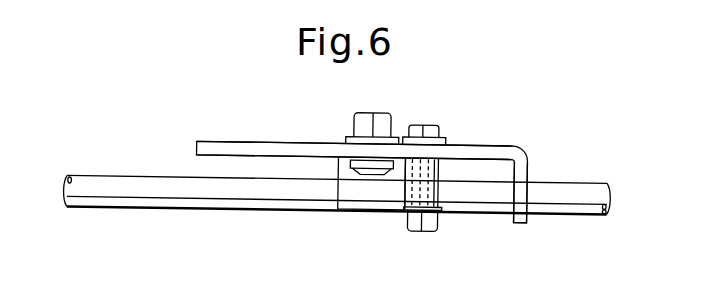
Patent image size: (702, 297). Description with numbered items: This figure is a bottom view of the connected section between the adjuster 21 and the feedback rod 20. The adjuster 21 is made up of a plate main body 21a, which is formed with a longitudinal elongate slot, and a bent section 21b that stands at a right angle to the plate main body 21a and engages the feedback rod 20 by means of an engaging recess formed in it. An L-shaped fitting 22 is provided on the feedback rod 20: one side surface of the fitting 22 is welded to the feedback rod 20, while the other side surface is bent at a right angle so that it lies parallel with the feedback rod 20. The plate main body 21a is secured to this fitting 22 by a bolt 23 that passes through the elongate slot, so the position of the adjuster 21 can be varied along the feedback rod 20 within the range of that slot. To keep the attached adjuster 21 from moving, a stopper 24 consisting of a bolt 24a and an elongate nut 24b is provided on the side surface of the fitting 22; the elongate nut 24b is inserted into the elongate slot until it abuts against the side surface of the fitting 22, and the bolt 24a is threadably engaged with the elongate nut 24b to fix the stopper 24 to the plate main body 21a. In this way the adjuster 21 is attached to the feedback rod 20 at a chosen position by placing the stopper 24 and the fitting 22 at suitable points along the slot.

The feedback rod 20 is at (133, 177).
The adjuster 21 is at (495, 132).
The plate main body 21a is at (248, 143).
The bent section 21b is at (530, 167).
The L-shaped fitting 22 is at (348, 176).
The bolt 23 is at (353, 122).
The stopper 24 is at (443, 168).
The bolt 24a is at (427, 125).
The elongate nut 24b is at (410, 231).